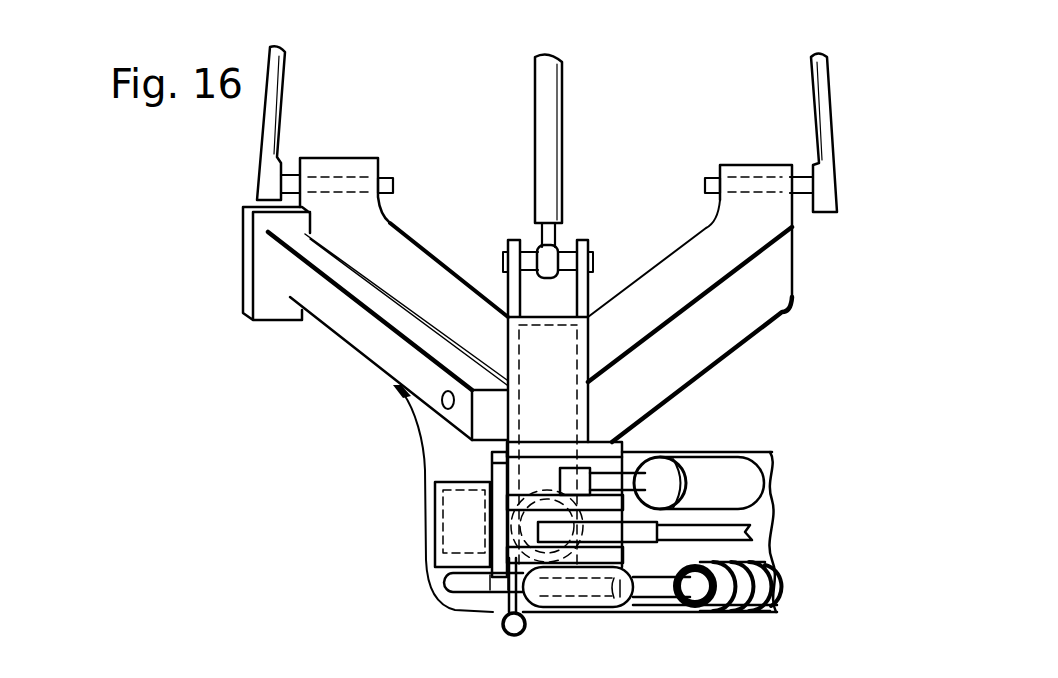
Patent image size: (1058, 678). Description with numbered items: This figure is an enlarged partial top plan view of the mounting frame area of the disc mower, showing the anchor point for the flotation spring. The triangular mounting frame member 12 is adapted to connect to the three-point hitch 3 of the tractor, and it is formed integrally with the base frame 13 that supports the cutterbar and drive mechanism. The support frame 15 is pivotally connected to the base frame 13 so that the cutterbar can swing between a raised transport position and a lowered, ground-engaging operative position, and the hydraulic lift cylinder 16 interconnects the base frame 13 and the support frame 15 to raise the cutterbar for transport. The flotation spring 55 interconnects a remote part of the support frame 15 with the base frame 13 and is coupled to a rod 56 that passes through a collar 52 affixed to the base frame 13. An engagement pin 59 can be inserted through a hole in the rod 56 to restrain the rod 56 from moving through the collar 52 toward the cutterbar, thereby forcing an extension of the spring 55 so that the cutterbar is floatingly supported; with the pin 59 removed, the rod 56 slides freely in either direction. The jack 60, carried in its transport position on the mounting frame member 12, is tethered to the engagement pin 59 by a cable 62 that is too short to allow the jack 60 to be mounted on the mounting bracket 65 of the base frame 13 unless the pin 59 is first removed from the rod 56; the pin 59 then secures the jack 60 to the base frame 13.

The three-point hitch 3 is at (818, 102).
The mounting frame member 12 is at (712, 335).
The base frame 13 is at (605, 447).
The support frame 15 is at (768, 515).
The hydraulic lift cylinder 16 is at (714, 474).
The collar 52 is at (553, 593).
The flotation spring 55 is at (747, 583).
The rod 56 is at (464, 592).
The engagement pin 59 is at (492, 603).
The jack 60 is at (357, 325).
The cable 62 is at (422, 448).
The mounting bracket 65 is at (460, 528).